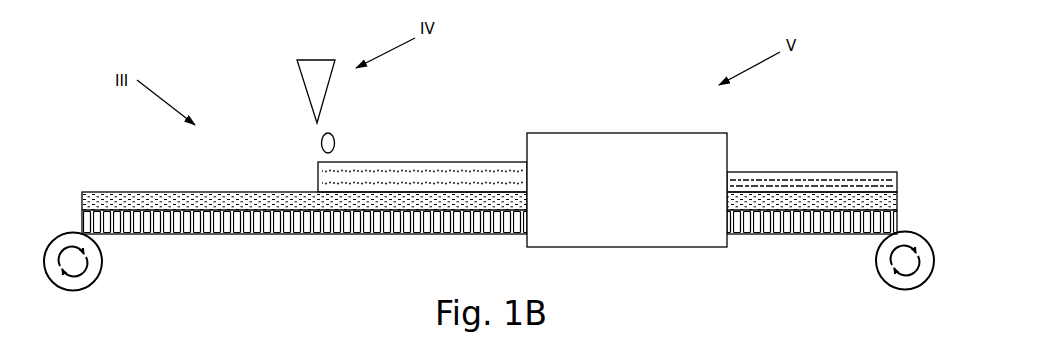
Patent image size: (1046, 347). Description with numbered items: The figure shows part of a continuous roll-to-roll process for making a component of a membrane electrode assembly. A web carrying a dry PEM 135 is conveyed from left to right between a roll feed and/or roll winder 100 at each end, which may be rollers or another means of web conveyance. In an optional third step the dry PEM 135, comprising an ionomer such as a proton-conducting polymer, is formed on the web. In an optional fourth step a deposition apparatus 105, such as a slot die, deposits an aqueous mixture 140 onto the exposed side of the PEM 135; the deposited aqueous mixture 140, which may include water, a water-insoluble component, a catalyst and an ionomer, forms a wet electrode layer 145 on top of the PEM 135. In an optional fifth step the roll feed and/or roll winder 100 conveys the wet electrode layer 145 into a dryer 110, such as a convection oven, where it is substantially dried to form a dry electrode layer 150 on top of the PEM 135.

The roll feed and/or roll winder 100 is at (72, 226).
The deposition apparatus 105 is at (296, 82).
The dryer 110 is at (647, 121).
The dry PEM 135 is at (141, 192).
The aqueous mixture 140 is at (318, 150).
The wet electrode layer 145 is at (459, 153).
The dry electrode layer 150 is at (840, 160).